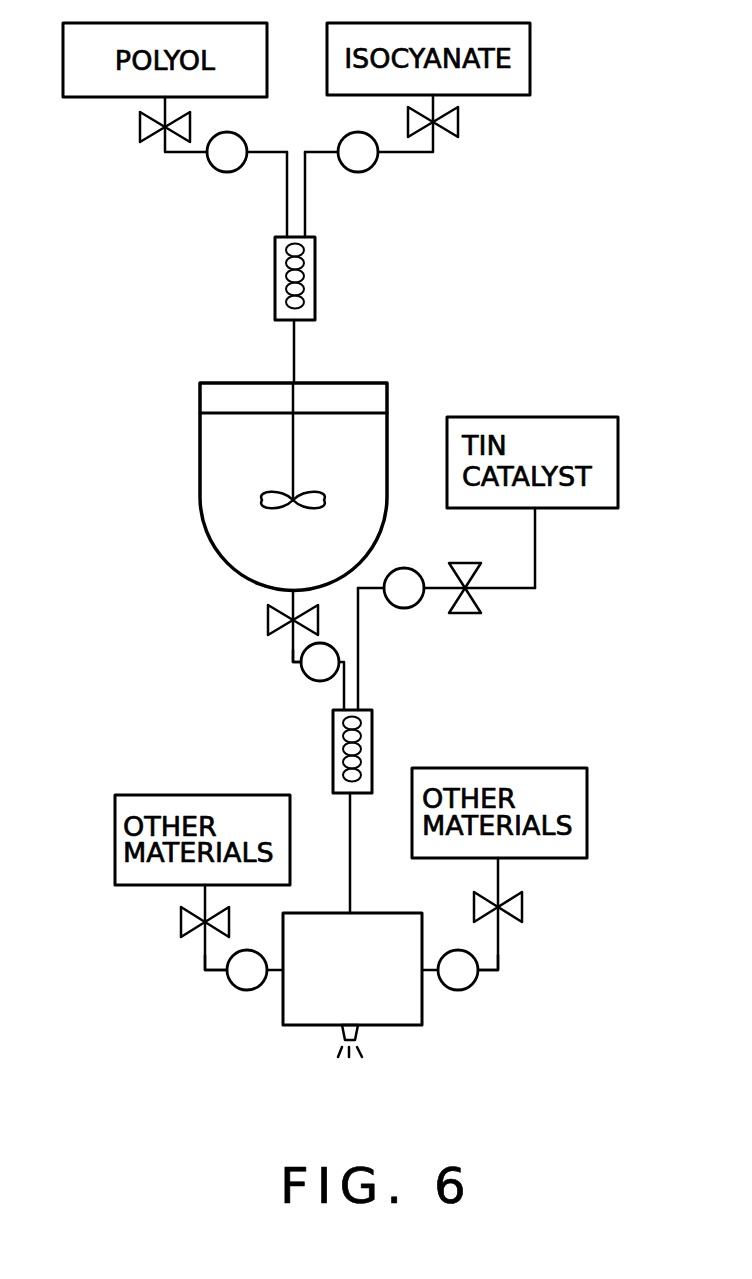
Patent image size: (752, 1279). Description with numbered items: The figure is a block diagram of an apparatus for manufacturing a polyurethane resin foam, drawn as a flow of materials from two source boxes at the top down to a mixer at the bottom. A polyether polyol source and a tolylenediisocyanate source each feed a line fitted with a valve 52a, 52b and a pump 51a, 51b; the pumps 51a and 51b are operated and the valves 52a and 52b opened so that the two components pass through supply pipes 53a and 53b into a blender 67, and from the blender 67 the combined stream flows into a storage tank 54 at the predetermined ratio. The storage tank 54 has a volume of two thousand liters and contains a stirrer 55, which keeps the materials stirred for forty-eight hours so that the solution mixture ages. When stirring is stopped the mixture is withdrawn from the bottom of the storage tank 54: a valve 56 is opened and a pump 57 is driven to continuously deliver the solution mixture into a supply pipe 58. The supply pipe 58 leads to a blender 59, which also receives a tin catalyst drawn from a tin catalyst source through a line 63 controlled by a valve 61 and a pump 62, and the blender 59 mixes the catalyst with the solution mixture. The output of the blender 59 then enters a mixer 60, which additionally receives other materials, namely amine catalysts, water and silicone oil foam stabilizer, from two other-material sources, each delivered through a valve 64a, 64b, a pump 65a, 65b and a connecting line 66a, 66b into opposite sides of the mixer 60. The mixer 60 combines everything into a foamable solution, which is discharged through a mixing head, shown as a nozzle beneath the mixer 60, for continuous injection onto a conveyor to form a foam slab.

The pump 51a is at (215, 172).
The pump 51b is at (368, 170).
The valve 52a is at (140, 128).
The valve 52b is at (458, 125).
The supply pipe 53a is at (287, 207).
The supply pipe 53b is at (306, 216).
The storage tank 54 is at (389, 445).
The stirrer 55 is at (291, 447).
The valve 56 is at (266, 621).
The pump 57 is at (313, 681).
The supply pipe 58 is at (292, 662).
The blender 59 is at (372, 722).
The mixer 60 is at (293, 1027).
The catalyst valve 61 is at (465, 614).
The catalyst pump 62 is at (407, 568).
The catalyst line 63 is at (510, 590).
The other materials valve 64a is at (180, 928).
The other materials valve 64b is at (523, 905).
The other materials pump 65a is at (240, 991).
The other materials pump 65b is at (465, 992).
The other materials line 66a is at (207, 975).
The other materials line 66b is at (488, 973).
The blender 67 is at (315, 297).